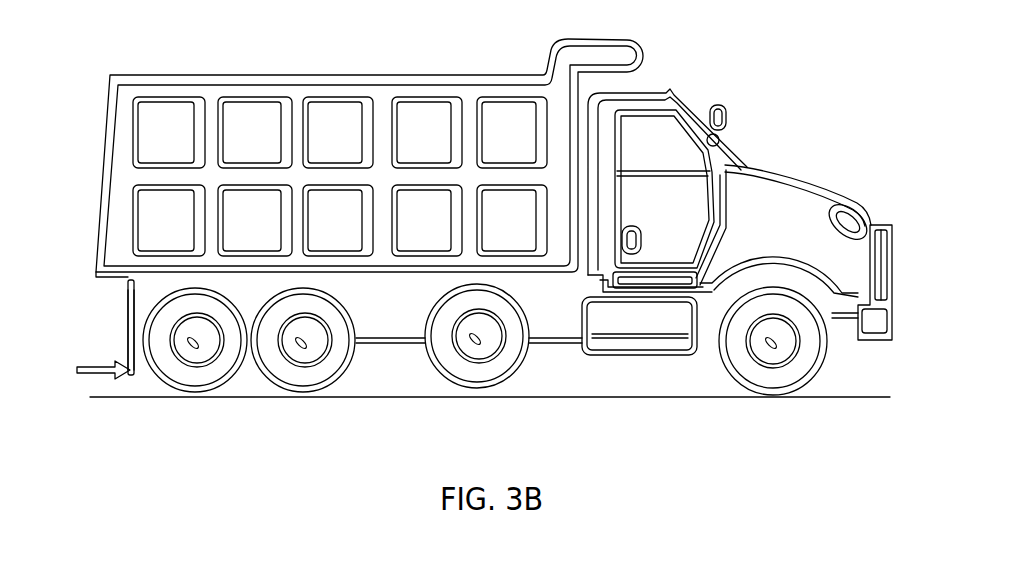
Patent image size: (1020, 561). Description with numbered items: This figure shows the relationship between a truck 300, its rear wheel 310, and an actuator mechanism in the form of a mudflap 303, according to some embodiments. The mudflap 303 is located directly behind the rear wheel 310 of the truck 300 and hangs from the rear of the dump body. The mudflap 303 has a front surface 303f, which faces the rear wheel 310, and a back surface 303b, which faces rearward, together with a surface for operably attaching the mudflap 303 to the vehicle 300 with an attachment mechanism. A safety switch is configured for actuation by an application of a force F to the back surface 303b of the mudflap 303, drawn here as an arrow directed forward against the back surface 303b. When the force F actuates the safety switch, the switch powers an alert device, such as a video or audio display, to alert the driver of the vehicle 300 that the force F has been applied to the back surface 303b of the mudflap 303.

The truck 300 is at (771, 168).
The mudflap 303 is at (130, 342).
The back surface 303b is at (130, 352).
The front surface 303f is at (133, 365).
The rear wheel 310 is at (193, 385).
The force F is at (103, 378).